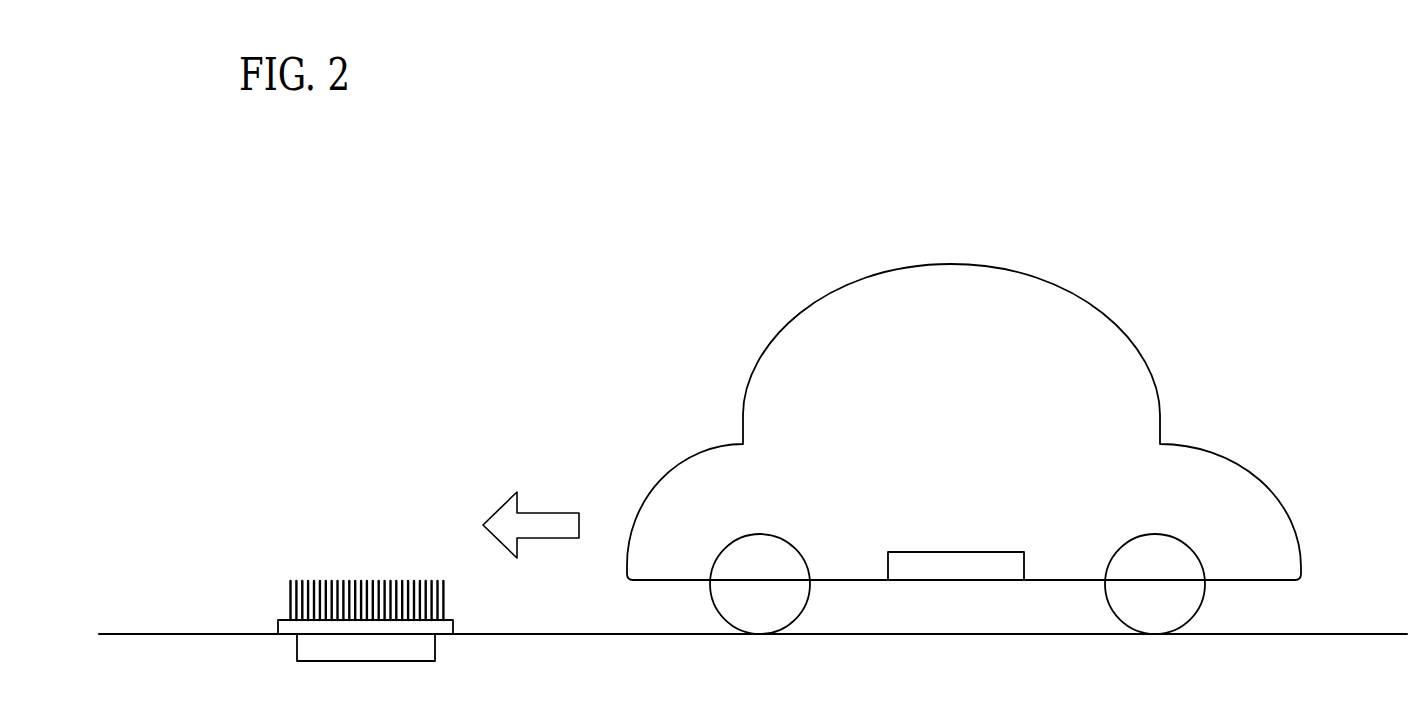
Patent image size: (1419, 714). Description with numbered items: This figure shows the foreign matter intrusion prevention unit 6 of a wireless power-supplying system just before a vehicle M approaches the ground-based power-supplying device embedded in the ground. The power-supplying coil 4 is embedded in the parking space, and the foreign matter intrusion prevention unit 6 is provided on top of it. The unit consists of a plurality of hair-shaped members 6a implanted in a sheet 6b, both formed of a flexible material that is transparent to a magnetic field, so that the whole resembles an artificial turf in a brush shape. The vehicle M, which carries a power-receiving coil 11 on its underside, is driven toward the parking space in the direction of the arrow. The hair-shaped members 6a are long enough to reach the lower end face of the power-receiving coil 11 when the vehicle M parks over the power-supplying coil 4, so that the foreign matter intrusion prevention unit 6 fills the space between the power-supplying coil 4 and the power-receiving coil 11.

The vehicle M is at (1107, 322).
The power-receiving coil 11 is at (1028, 565).
The foreign matter intrusion prevention unit 6 is at (355, 591).
The hair-shaped members 6a is at (445, 593).
The sheet 6b is at (453, 627).
The power-supplying coil 4 is at (435, 647).